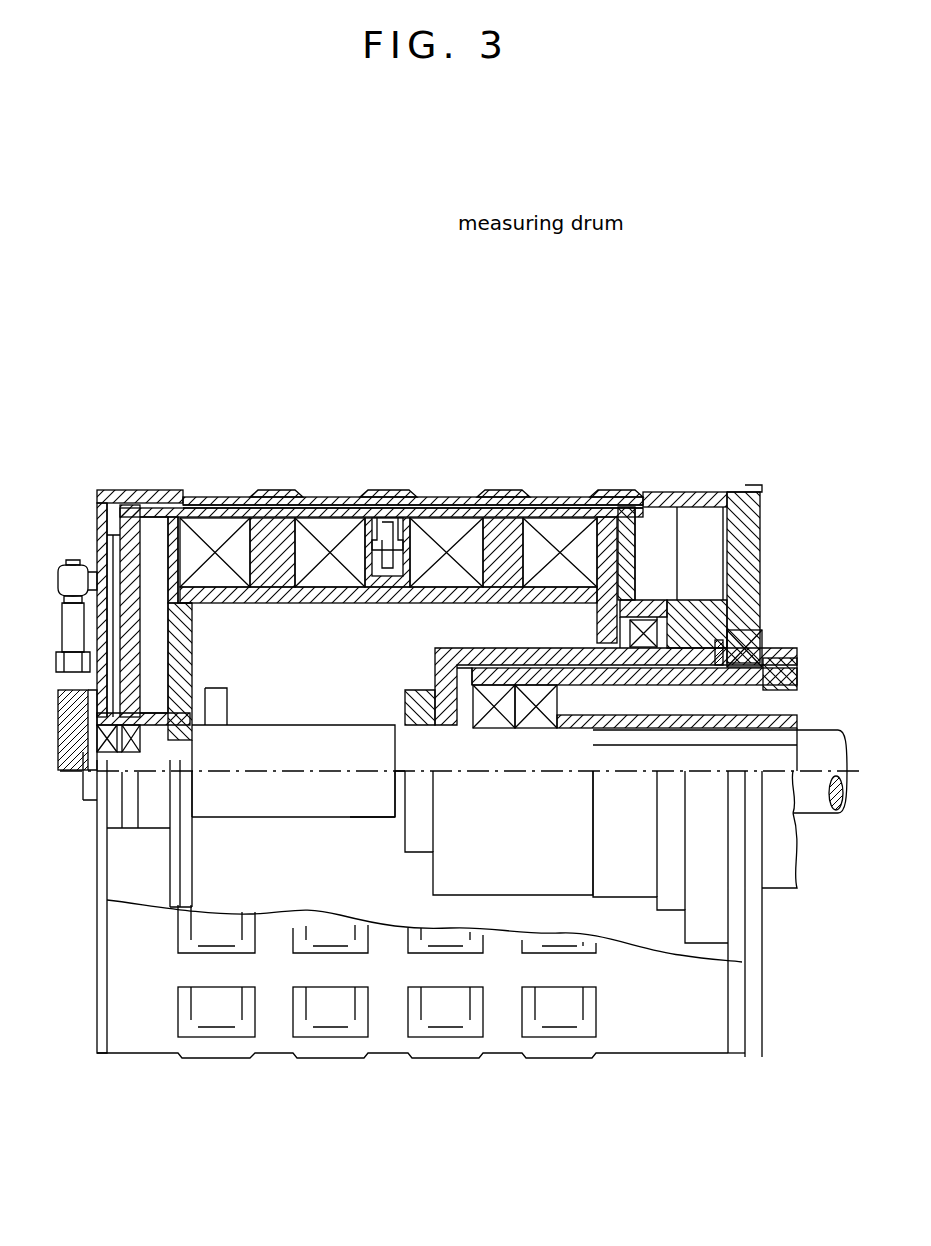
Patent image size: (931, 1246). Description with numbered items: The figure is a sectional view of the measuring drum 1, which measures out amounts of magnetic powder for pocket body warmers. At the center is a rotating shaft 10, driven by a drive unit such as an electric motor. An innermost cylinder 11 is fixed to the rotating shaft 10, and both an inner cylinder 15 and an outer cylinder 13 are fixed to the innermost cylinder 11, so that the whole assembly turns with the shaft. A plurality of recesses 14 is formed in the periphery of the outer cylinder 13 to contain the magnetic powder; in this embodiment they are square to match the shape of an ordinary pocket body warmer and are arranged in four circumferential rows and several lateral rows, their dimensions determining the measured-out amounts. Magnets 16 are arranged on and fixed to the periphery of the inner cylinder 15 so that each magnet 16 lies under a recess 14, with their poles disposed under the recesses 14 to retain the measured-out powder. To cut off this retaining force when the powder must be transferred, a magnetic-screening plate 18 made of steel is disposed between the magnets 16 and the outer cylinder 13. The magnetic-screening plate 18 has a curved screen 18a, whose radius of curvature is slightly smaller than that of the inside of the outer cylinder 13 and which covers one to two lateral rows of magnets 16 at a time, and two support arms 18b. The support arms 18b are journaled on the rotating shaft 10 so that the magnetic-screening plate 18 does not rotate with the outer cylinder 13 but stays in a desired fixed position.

The measuring drum 1 is at (512, 380).
The rotating shaft 10 is at (272, 800).
The innermost cylinder 11 is at (437, 660).
The outer cylinder 13 is at (706, 497).
The recesses 14 is at (230, 497).
The inner cylinder 15 is at (318, 588).
The magnets 16 is at (232, 585).
The magnetic-screening plate 18 is at (180, 393).
The curved screen 18a is at (154, 505).
The support arms 18b is at (78, 600).